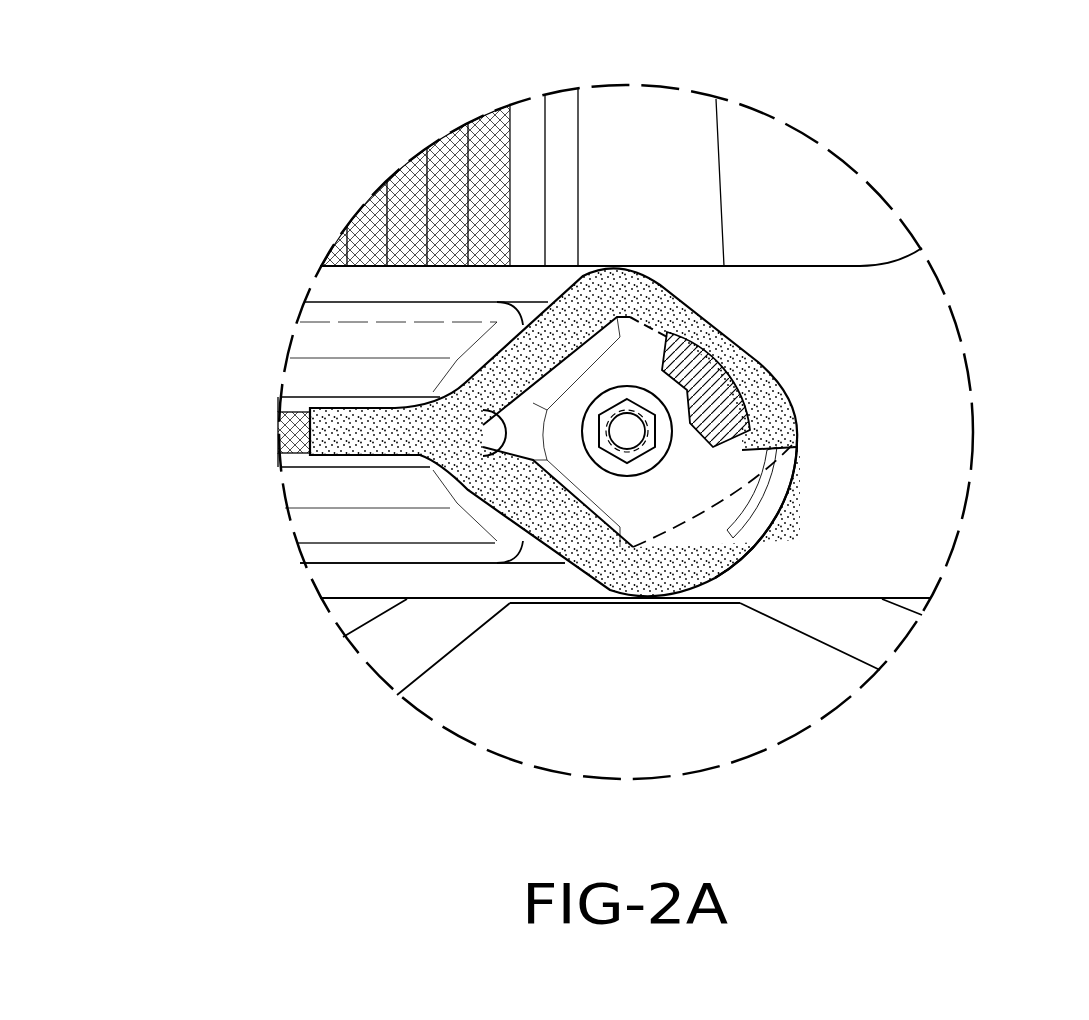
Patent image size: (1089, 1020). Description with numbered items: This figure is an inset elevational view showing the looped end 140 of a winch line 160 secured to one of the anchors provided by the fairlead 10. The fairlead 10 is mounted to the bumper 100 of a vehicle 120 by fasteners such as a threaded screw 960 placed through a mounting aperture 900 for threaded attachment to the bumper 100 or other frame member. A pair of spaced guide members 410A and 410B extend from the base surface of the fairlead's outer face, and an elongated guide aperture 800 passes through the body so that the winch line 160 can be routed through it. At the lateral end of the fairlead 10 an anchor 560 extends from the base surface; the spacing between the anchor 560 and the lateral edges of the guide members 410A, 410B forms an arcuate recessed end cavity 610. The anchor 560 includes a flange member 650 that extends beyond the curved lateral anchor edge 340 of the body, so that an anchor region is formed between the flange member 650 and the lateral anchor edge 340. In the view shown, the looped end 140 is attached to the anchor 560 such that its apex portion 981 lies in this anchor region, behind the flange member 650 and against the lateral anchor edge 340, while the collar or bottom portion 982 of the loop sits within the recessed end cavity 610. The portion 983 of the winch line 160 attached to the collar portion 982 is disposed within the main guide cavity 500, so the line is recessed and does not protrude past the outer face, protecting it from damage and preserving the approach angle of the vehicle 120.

The fairlead 10 is at (480, 555).
The bumper 100 is at (935, 480).
The vehicle 120 is at (675, 145).
The looped end 140 is at (648, 290).
The winch line 160 is at (327, 443).
The lateral anchor edge 340 is at (747, 415).
The guide member 410A is at (395, 338).
The guide member 410B is at (395, 527).
The main guide cavity 500 is at (353, 402).
The anchor 560 is at (693, 467).
The recessed end cavity 610 is at (532, 298).
The flange member 650 is at (777, 475).
The guide aperture 800 is at (353, 468).
The mounting aperture 900 is at (643, 405).
The threaded screw 960 is at (663, 372).
The apex portion 981 is at (797, 427).
The collar or bottom portion 982 is at (457, 483).
The portion of the winch line 983 is at (327, 410).